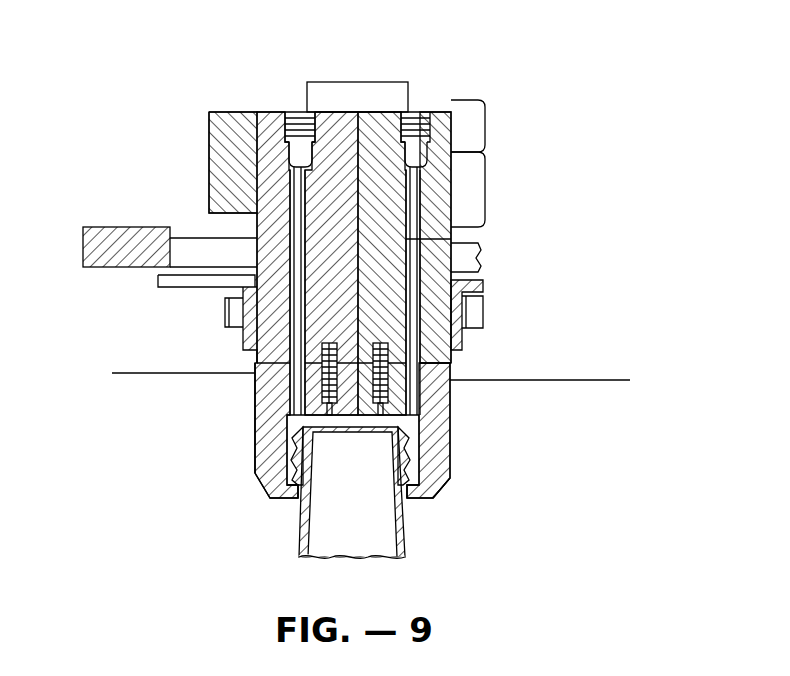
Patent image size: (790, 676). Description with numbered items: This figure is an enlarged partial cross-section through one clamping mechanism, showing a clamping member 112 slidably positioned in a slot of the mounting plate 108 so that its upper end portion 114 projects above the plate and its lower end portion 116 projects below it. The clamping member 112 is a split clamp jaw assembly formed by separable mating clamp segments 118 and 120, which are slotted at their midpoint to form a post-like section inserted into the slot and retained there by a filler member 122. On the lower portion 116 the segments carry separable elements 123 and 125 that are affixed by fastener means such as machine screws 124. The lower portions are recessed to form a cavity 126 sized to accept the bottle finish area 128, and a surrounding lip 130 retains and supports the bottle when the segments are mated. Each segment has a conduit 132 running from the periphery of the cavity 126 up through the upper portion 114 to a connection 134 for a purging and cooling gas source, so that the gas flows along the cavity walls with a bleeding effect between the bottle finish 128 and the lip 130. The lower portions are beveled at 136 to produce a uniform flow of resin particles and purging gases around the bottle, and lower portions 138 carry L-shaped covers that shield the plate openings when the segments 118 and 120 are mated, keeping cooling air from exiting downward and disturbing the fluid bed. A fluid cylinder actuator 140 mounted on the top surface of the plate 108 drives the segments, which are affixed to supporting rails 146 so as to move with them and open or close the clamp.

The mounting plate 108 is at (200, 245).
The clamping member 112 is at (453, 360).
The upper end portion 114 is at (188, 102).
The lower end portion 116 is at (222, 393).
The clamp segment 118 is at (383, 132).
The clamp segment 120 is at (272, 125).
The filler member 122 is at (107, 226).
The separable element 123 is at (255, 410).
The machine screw 124 is at (295, 432).
The separable element 125 is at (440, 430).
The cavity 126 is at (272, 487).
The bottle finish area 128 is at (415, 500).
The lip 130 is at (302, 505).
The conduit 132 is at (453, 238).
The connection 134 is at (308, 118).
The bevel 136 is at (437, 480).
The lower portion 138 is at (158, 282).
The fluid cylinder actuator 140 is at (484, 103).
The supporting rail 146 is at (484, 160).